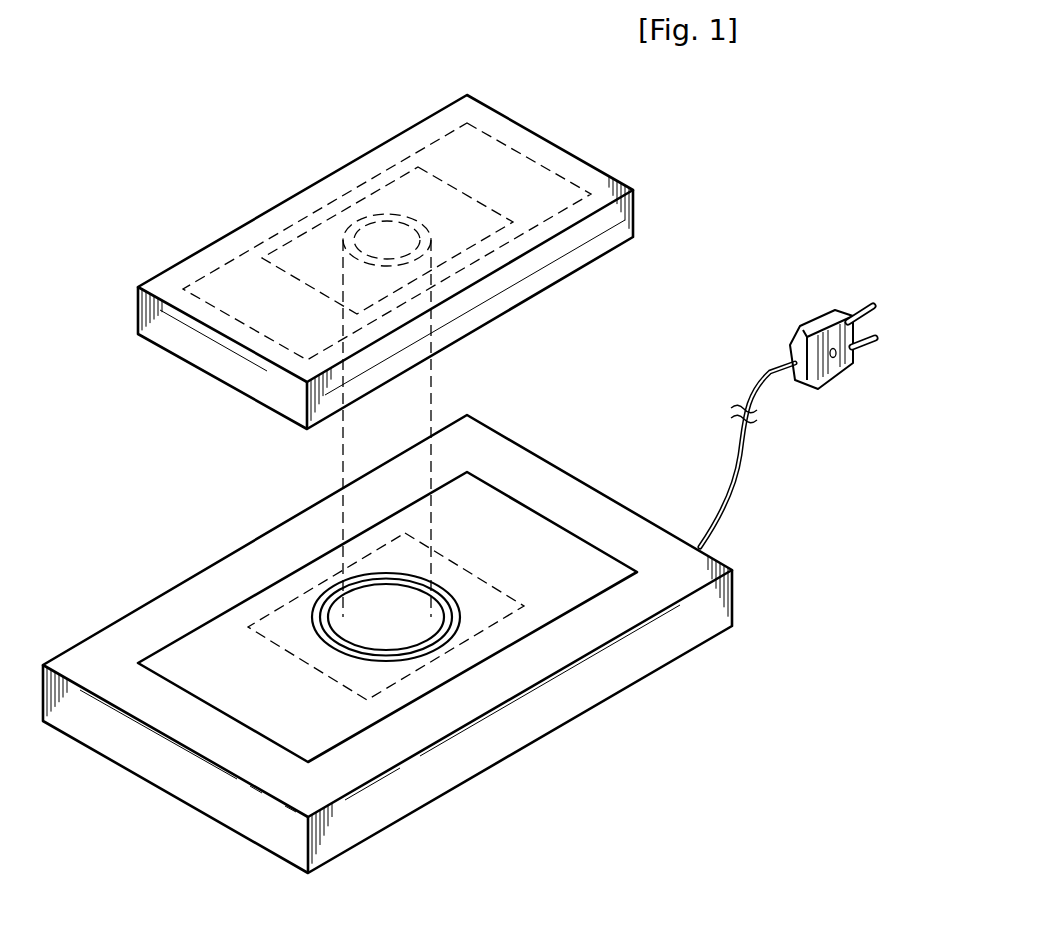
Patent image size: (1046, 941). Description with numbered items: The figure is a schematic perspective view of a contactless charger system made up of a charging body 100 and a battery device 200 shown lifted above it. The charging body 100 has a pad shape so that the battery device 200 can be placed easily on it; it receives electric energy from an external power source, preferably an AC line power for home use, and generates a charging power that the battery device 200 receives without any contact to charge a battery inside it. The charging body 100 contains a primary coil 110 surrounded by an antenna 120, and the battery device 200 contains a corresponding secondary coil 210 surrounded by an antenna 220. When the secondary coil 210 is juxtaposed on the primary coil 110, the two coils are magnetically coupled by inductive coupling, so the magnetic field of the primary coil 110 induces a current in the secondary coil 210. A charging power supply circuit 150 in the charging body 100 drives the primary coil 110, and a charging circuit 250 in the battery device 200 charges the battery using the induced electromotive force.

The charging body 100 is at (593, 500).
The primary coil 110 is at (332, 593).
The antenna 120 is at (283, 608).
The charging power supply circuit 150 is at (222, 613).
The battery device 200 is at (541, 143).
The secondary coil 210 is at (368, 223).
The antenna 220 is at (312, 228).
The charging circuit 250 is at (428, 142).